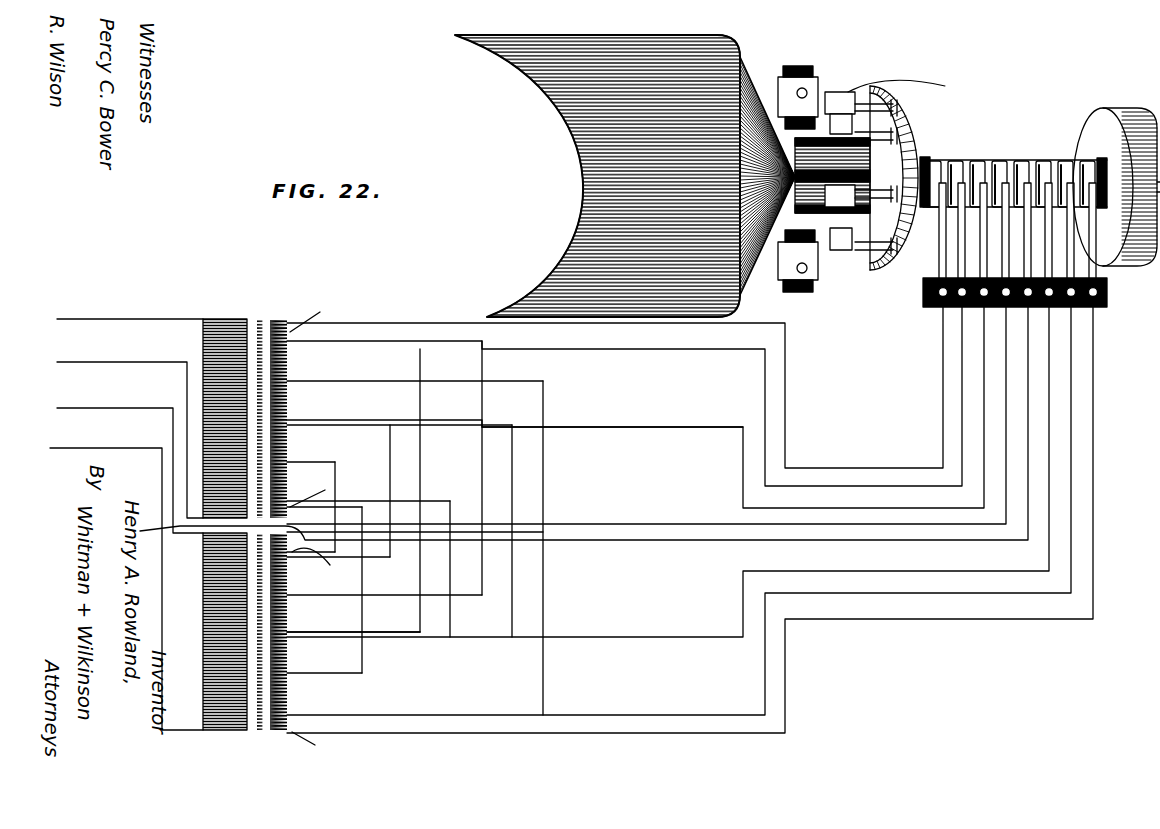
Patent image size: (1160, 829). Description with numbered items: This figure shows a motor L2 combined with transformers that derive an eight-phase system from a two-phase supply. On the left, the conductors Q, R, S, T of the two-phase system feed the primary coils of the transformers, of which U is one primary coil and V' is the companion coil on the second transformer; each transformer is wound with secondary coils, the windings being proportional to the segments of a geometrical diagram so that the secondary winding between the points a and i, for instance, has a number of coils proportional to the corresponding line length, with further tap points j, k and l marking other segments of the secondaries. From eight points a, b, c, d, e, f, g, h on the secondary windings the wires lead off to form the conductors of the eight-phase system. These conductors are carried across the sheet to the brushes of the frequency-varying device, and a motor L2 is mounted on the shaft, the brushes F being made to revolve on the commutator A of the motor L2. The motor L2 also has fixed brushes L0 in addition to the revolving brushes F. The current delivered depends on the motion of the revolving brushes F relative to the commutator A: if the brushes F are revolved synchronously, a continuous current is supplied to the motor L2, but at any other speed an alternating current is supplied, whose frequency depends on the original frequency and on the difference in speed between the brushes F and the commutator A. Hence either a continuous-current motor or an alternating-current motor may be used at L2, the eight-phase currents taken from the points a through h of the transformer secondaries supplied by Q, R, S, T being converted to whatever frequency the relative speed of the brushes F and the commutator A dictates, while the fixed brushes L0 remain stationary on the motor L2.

The motor L2 is at (625, 176).
The fixed brushes L0 is at (803, 93).
The commutator A is at (878, 188).
The revolving brushes F is at (858, 162).
The primary coil U is at (241, 403).
The transformer coil V' is at (245, 647).
The conductor of the two-phase system Q is at (116, 320).
The conductor of the two-phase system R is at (115, 434).
The conductor of the two-phase system S is at (116, 465).
The conductor of the two-phase system T is at (116, 583).
The eight-phase conductor point a is at (300, 316).
The eight-phase conductor point b is at (290, 340).
The eight-phase conductor point c is at (290, 733).
The eight-phase conductor point d is at (290, 425).
The eight-phase conductor point e is at (292, 521).
The eight-phase conductor point f is at (290, 638).
The eight-phase conductor point g is at (573, 434).
The eight-phase conductor point h is at (290, 425).
The secondary winding point i is at (309, 313).
The coil terminal j is at (305, 748).
The coil tap k is at (309, 493).
The coil tap l is at (314, 566).